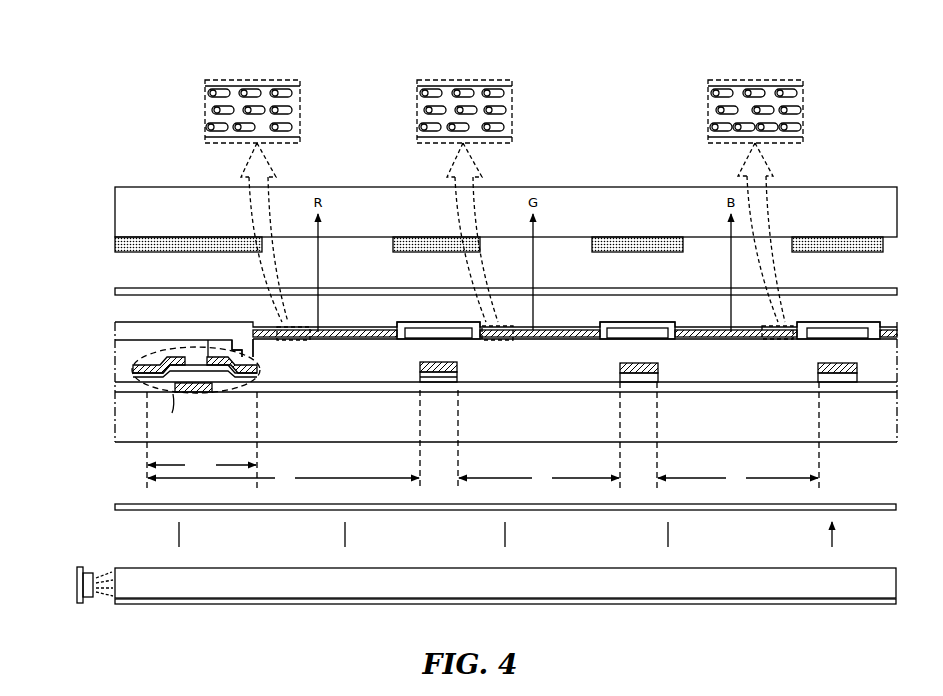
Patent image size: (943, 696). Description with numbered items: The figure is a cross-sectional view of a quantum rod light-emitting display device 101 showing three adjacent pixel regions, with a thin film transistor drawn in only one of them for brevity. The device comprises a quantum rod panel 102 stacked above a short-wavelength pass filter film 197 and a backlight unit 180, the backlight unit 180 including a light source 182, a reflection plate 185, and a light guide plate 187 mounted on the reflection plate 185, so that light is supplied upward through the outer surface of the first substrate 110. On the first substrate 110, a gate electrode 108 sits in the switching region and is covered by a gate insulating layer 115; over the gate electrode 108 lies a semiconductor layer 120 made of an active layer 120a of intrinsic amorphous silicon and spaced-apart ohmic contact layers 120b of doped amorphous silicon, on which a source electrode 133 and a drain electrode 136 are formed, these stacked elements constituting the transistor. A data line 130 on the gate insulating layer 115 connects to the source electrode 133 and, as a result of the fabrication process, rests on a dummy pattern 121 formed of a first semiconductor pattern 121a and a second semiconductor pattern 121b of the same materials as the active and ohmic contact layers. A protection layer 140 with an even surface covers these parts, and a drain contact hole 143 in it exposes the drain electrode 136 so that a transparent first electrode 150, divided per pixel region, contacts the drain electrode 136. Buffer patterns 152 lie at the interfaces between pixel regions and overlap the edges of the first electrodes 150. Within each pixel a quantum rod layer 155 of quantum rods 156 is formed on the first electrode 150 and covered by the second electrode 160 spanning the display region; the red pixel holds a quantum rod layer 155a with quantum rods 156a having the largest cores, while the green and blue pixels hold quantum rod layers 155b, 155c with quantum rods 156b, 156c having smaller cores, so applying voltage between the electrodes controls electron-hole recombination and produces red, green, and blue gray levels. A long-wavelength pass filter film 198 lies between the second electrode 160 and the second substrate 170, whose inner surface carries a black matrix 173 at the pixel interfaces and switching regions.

The quantum rod light-emitting display device 101 is at (862, 113).
The quantum rod panel 102 is at (100, 187).
The gate electrode 108 is at (195, 394).
The first substrate 110 is at (891, 438).
The gate insulating layer 115 is at (335, 388).
The semiconductor layer 120 is at (211, 402).
The active layer 120a is at (230, 380).
The ohmic contact layers 120b is at (248, 380).
The dummy pattern 121 is at (445, 404).
The first semiconductor pattern 121a is at (430, 378).
The second semiconductor pattern 121b is at (445, 378).
The data line 130 is at (445, 362).
The source electrode 133 is at (172, 357).
The drain electrode 136 is at (212, 357).
The protection layer 140 is at (363, 377).
The drain contact hole 143 is at (239, 343).
The first electrode 150 is at (332, 338).
The buffer patterns 152 is at (665, 340).
The quantum rod layer 155 is at (610, 137).
The quantum rod layer of red pixel region 155a is at (377, 185).
The quantum rod layer of green pixel region 155b is at (503, 185).
The quantum rod layer of blue pixel region 155c is at (720, 184).
The quantum rods 156 is at (249, 86).
The quantum rods of red pixel region 156a is at (262, 92).
The quantum rods of green pixel region 156b is at (460, 92).
The quantum rods of blue pixel region 156c is at (752, 92).
The second electrode 160 is at (573, 338).
The second substrate 170 is at (886, 218).
The black matrix 173 is at (191, 238).
The backlight unit 180 is at (74, 595).
The light source 182 is at (75, 560).
The reflection plate 185 is at (290, 606).
The light guide plate 187 is at (336, 600).
The short-wavelength pass filter film 197 is at (115, 508).
The long-wavelength pass filter film 198 is at (123, 290).